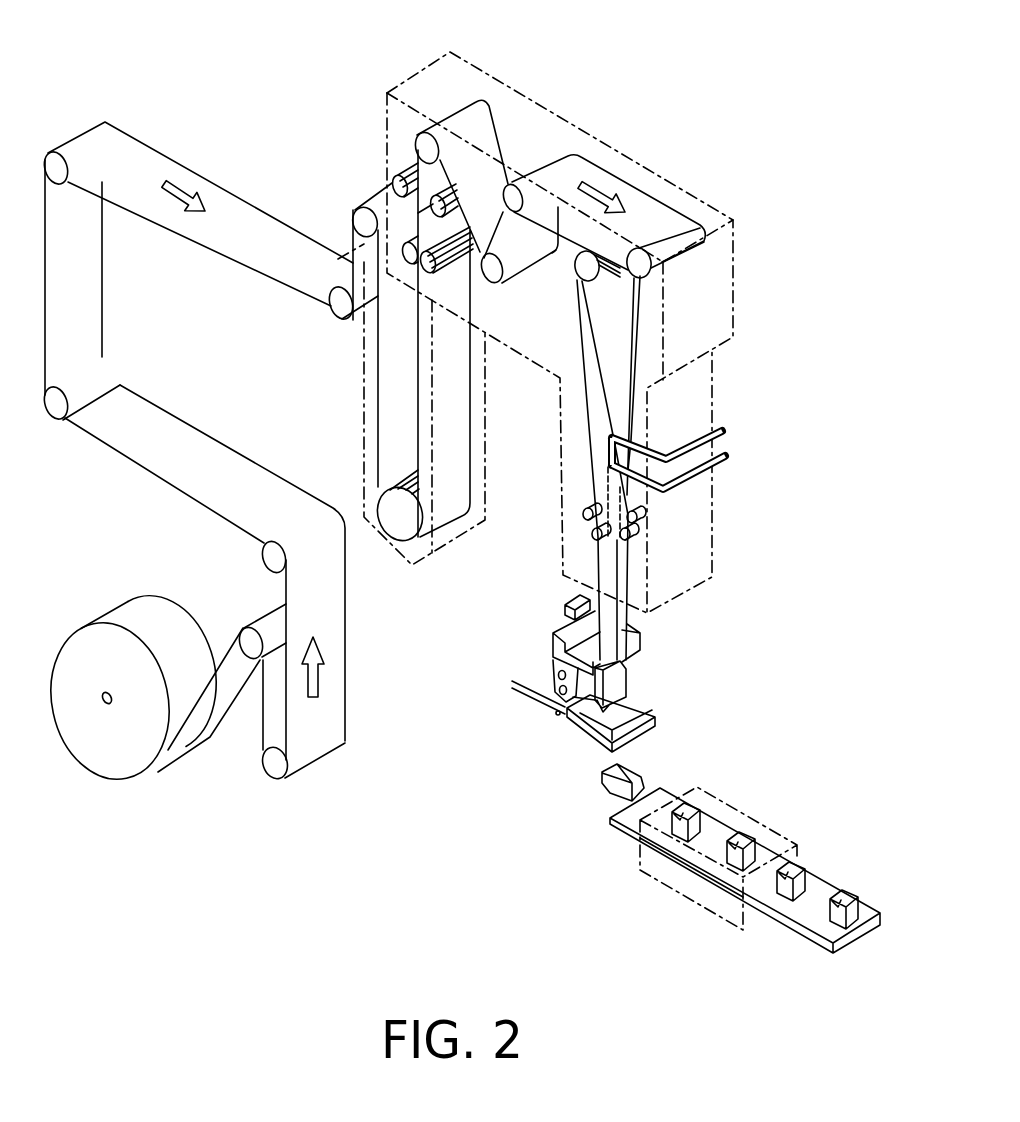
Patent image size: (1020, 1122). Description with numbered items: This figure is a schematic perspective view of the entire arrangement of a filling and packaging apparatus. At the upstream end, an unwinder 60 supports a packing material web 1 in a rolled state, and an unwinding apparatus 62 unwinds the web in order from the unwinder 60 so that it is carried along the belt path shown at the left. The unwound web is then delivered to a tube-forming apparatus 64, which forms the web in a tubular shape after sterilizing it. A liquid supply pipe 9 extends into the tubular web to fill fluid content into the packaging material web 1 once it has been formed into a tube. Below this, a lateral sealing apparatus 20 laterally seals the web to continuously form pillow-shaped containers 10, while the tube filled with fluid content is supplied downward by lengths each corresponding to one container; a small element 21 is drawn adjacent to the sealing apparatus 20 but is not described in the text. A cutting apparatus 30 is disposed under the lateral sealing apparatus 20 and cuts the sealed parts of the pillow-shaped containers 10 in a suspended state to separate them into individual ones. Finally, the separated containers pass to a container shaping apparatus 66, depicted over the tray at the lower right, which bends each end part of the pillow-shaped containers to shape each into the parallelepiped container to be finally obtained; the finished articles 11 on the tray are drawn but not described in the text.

The packing material web 1 is at (133, 463).
The liquid supply pipe 9 is at (688, 440).
The pillow-shaped container 10 is at (656, 759).
The articles on tray 11 is at (847, 890).
The lateral sealing apparatus 20 is at (664, 635).
The block 21 is at (552, 634).
The cutting apparatus 30 is at (558, 762).
The unwinder 60 is at (86, 774).
The unwinding apparatus 62 is at (238, 601).
The tube-forming apparatus 64 is at (573, 535).
The container shaping apparatus 66 is at (759, 794).